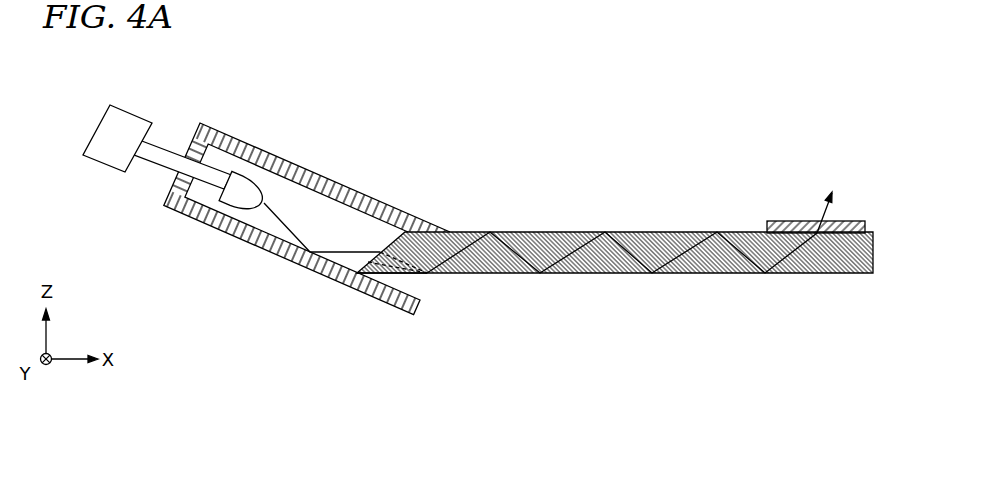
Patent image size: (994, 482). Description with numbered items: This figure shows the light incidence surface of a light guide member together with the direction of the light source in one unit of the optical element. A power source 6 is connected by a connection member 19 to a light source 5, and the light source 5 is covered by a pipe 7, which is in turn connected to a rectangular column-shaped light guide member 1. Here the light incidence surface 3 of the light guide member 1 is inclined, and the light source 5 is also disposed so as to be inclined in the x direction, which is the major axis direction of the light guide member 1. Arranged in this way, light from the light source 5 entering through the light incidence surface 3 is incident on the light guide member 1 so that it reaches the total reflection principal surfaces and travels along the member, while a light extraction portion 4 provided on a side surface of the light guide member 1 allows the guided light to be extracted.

The light guide member 1 is at (817, 265).
The light incidence surface 3 is at (427, 276).
The light extraction portion 4 is at (797, 221).
The light source 5 is at (243, 182).
The power source 6 is at (120, 131).
The pipe 7 is at (328, 179).
The connection member 19 is at (157, 153).